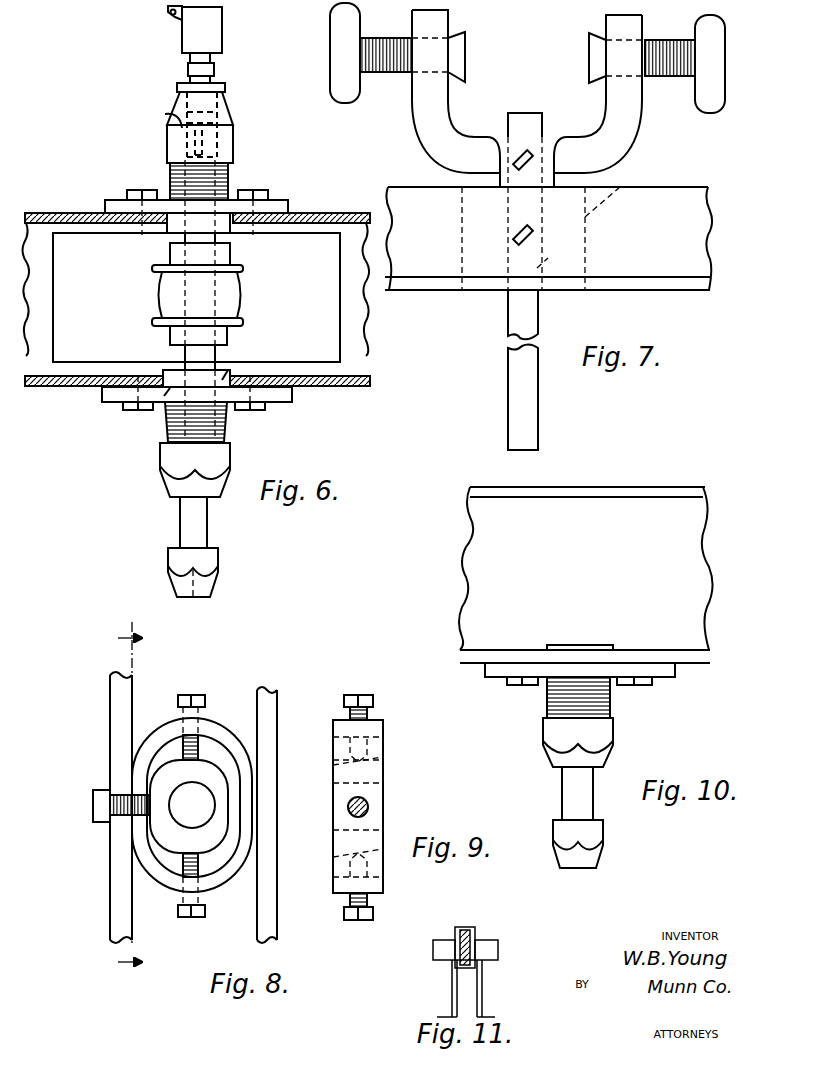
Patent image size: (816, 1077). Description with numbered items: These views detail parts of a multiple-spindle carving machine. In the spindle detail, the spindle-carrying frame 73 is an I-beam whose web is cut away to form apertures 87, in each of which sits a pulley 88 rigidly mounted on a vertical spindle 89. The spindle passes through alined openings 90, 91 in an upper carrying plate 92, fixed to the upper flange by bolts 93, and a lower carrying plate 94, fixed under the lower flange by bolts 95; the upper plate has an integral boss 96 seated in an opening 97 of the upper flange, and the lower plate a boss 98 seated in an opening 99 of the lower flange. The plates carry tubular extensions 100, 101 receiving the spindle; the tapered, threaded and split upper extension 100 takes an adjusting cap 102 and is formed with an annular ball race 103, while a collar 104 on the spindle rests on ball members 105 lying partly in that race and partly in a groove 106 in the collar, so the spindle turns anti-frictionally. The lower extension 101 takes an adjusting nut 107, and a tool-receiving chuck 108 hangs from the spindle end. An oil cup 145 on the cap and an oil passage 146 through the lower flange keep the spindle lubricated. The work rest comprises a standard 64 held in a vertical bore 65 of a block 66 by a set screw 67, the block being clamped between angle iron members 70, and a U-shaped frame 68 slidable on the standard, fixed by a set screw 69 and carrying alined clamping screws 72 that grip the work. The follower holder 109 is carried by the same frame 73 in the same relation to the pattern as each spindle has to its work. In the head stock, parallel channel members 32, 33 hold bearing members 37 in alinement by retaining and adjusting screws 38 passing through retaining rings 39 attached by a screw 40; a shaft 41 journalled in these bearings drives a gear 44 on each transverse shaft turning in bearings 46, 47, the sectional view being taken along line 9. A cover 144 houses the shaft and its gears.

In FIG. 6, the oil cup 145 is at (212, 42).
In FIG. 6, the adjusting cap 102 is at (226, 108).
In FIG. 6, the annular ball race 103 is at (234, 141).
In FIG. 6, the collar 104 is at (234, 123).
In FIG. 6, the ball members 105 is at (180, 128).
In FIG. 6, the annular groove 106 is at (160, 113).
In FIG. 6, the tubular extension 100 is at (230, 178).
In FIG. 6, the bolts 93 is at (203, 203).
In FIG. 6, the upper carrying plate 92 is at (284, 205).
In FIG. 6, the spindle-carrying frame 73 is at (340, 214).
In FIG. 10, the spindle-carrying frame 73 is at (680, 574).
In FIG. 6, the apertures 87 is at (335, 341).
In FIG. 6, the opening 97 is at (168, 225).
In FIG. 6, the opening 90 is at (185, 238).
In FIG. 6, the boss 96 is at (230, 235).
In FIG. 6, the pulley 88 is at (238, 300).
In FIG. 6, the spindle 89 is at (215, 355).
In FIG. 6, the opening 91 is at (185, 362).
In FIG. 6, the boss 98 is at (165, 378).
In FIG. 6, the oil passage 146 is at (230, 374).
In FIG. 6, the lower carrying plate 94 is at (283, 398).
In FIG. 6, the bolts 95 is at (240, 420).
In FIG. 6, the opening 99 is at (164, 397).
In FIG. 6, the tubular extension 101 is at (226, 435).
In FIG. 6, the adjusting nut 107 is at (162, 474).
In FIG. 6, the tool-receiving chuck 108 is at (219, 565).
In FIG. 7, the clamping screws 72 is at (378, 38).
In FIG. 7, the U-shaped frame 68 is at (606, 20).
In FIG. 7, the standard 64 is at (527, 118).
In FIG. 7, the set screw 69 is at (534, 152).
In FIG. 7, the set screw 67 is at (512, 237).
In FIG. 7, the block 66 is at (614, 193).
In FIG. 7, the angle iron members 70 is at (680, 202).
In FIG. 7, the vertical bore 65 is at (556, 258).
In FIG. 10, the follower holder 109 is at (613, 715).
In FIG. 8, the section line 9 is at (127, 802).
In FIG. 8, the parallel member 32 is at (110, 725).
In FIG. 11, the parallel member 32 is at (452, 994).
In FIG. 8, the parallel member 33 is at (277, 755).
In FIG. 11, the parallel member 33 is at (482, 994).
In FIG. 8, the retaining and adjusting screws 38 is at (194, 696).
In FIG. 9, the retaining and adjusting screws 38 is at (370, 696).
In FIG. 8, the retaining rings 39 is at (218, 734).
In FIG. 9, the retaining rings 39 is at (383, 723).
In FIG. 8, the bearing members 37 is at (218, 780).
In FIG. 9, the bearing members 37 is at (383, 773).
In FIG. 8, the screw 40 is at (93, 804).
In FIG. 9, the screw 40 is at (368, 808).
In FIG. 8, the shaft 41 is at (200, 812).
In FIG. 11, the cover 144 is at (475, 930).
In FIG. 11, the bearing 47 is at (433, 948).
In FIG. 11, the bearing 46 is at (498, 950).
In FIG. 11, the gear 44 is at (458, 962).